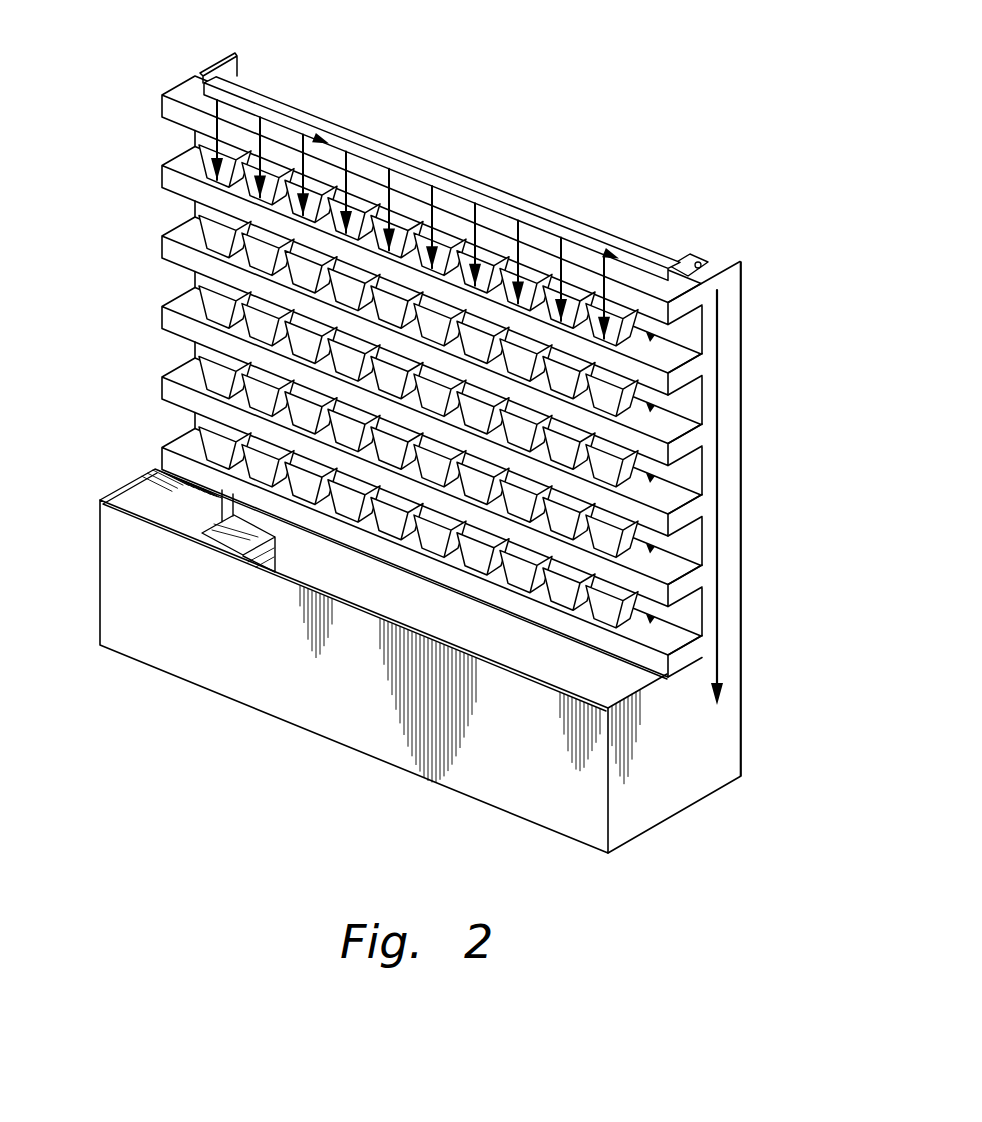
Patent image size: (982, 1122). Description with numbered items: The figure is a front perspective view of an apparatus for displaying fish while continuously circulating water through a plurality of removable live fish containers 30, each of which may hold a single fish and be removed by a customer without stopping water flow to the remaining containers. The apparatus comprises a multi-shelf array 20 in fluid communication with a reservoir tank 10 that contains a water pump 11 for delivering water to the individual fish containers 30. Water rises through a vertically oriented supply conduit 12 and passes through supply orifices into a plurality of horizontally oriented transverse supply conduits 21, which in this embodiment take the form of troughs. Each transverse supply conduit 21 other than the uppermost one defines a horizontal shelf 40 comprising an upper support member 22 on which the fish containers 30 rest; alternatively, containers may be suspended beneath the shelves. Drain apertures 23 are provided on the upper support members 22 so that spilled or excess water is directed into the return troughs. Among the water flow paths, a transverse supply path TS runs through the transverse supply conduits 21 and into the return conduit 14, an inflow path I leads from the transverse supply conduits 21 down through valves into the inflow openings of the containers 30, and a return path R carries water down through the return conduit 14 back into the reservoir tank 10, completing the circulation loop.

The reservoir tank 10 is at (567, 793).
The water pump 11 is at (218, 538).
The supply conduit 12 is at (240, 77).
The return conduit 14 is at (718, 257).
The multi-shelf array 20 is at (124, 263).
The transverse supply conduit 21 is at (160, 177).
The upper support member 22 is at (188, 97).
The drain aperture 23 is at (648, 616).
The fish container 30 is at (180, 373).
The horizontal shelf 40 is at (648, 475).
The transverse supply path TS is at (413, 178).
The inflow path I is at (546, 250).
The return path R is at (648, 546).